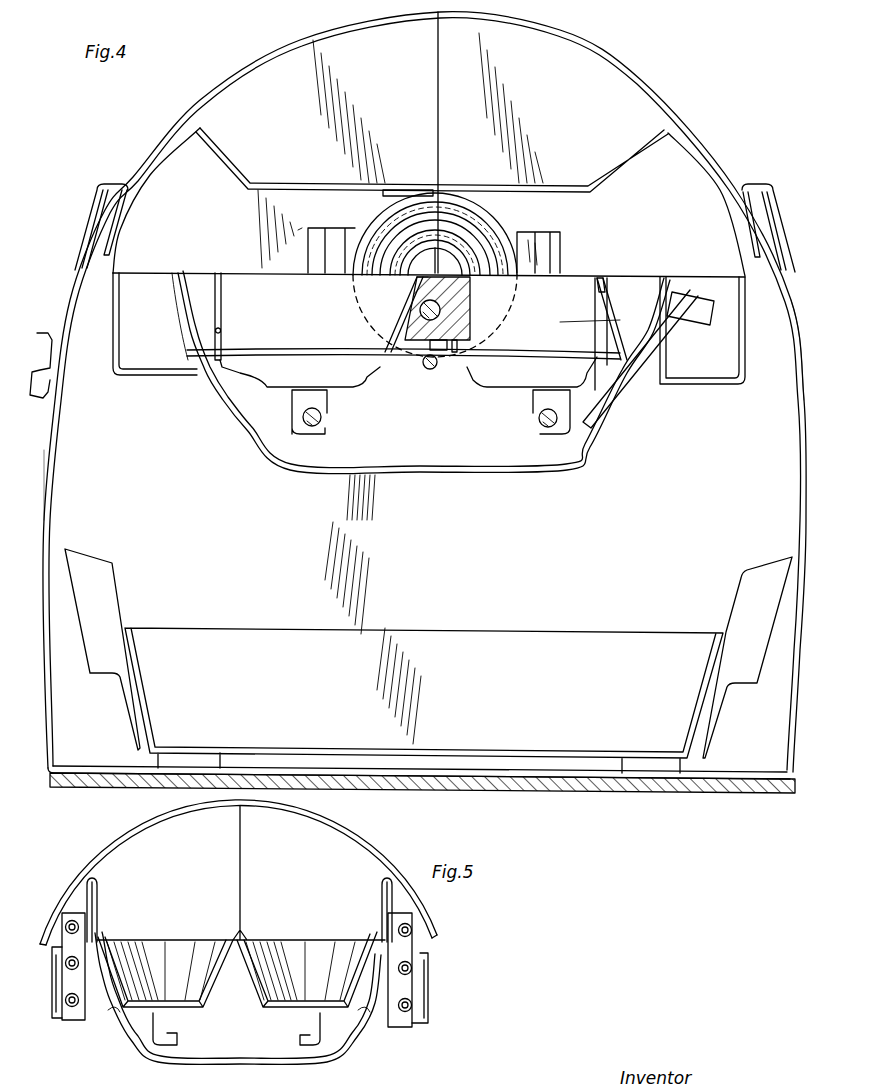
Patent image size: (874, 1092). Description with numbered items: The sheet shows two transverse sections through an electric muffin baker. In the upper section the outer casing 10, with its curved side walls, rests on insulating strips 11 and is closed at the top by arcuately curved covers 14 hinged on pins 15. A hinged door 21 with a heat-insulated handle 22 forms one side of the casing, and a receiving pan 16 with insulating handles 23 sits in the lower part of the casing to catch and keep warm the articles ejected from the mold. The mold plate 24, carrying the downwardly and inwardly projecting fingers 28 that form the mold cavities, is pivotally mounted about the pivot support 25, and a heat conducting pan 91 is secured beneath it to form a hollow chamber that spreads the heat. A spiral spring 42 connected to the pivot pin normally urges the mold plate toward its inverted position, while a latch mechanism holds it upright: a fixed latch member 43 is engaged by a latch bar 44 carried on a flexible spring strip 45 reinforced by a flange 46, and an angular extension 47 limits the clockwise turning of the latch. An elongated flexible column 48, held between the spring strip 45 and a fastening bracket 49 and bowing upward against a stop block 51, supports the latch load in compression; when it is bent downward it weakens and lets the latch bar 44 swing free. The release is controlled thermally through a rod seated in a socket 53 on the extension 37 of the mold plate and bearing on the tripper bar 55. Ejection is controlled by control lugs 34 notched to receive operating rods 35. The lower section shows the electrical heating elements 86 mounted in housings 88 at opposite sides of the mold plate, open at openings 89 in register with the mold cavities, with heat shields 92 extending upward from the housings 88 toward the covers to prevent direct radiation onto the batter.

In FIG. 4, the outer casing 10 is at (785, 286).
In FIG. 4, the insulating strips 11 is at (692, 793).
In FIG. 4, the covers 14 is at (200, 103).
In FIG. 5, the covers 14 is at (150, 820).
In FIG. 4, the pins 15 is at (426, 368).
In FIG. 4, the receiving pan 16 is at (533, 648).
In FIG. 4, the hinged door 21 is at (50, 473).
In FIG. 4, the heat-insulated handle 22 is at (40, 336).
In FIG. 4, the insulating handles 23 is at (107, 597).
In FIG. 5, the mold plate 24 is at (241, 938).
In FIG. 4, the pivot support 25 is at (417, 281).
In FIG. 5, the fingers 28 is at (128, 940).
In FIG. 4, the control lug 34 is at (323, 397).
In FIG. 5, the control lug 34 is at (179, 1020).
In FIG. 4, the operating rod 35 is at (323, 420).
In FIG. 4, the extension 37 is at (405, 322).
In FIG. 4, the spiral spring 42 is at (505, 216).
In FIG. 4, the fixed latch member 43 is at (693, 300).
In FIG. 4, the latch bar 44 is at (617, 387).
In FIG. 4, the flexible spring strip 45 is at (603, 297).
In FIG. 4, the flange 46 is at (610, 325).
In FIG. 4, the angular extension 47 is at (593, 327).
In FIG. 4, the flexible column 48 is at (462, 352).
In FIG. 4, the fastening bracket 49 is at (216, 388).
In FIG. 4, the stop block 51 is at (410, 354).
In FIG. 4, the socket 53 is at (423, 307).
In FIG. 4, the tripper bar 55 is at (447, 352).
In FIG. 5, the electrical heating elements 86 is at (68, 1005).
In FIG. 5, the housings 88 is at (52, 990).
In FIG. 5, the openings 89 is at (113, 1023).
In FIG. 4, the heat conducting pan 91 is at (405, 475).
In FIG. 5, the heat conducting pan 91 is at (205, 1063).
In FIG. 5, the heat shields 92 is at (98, 900).